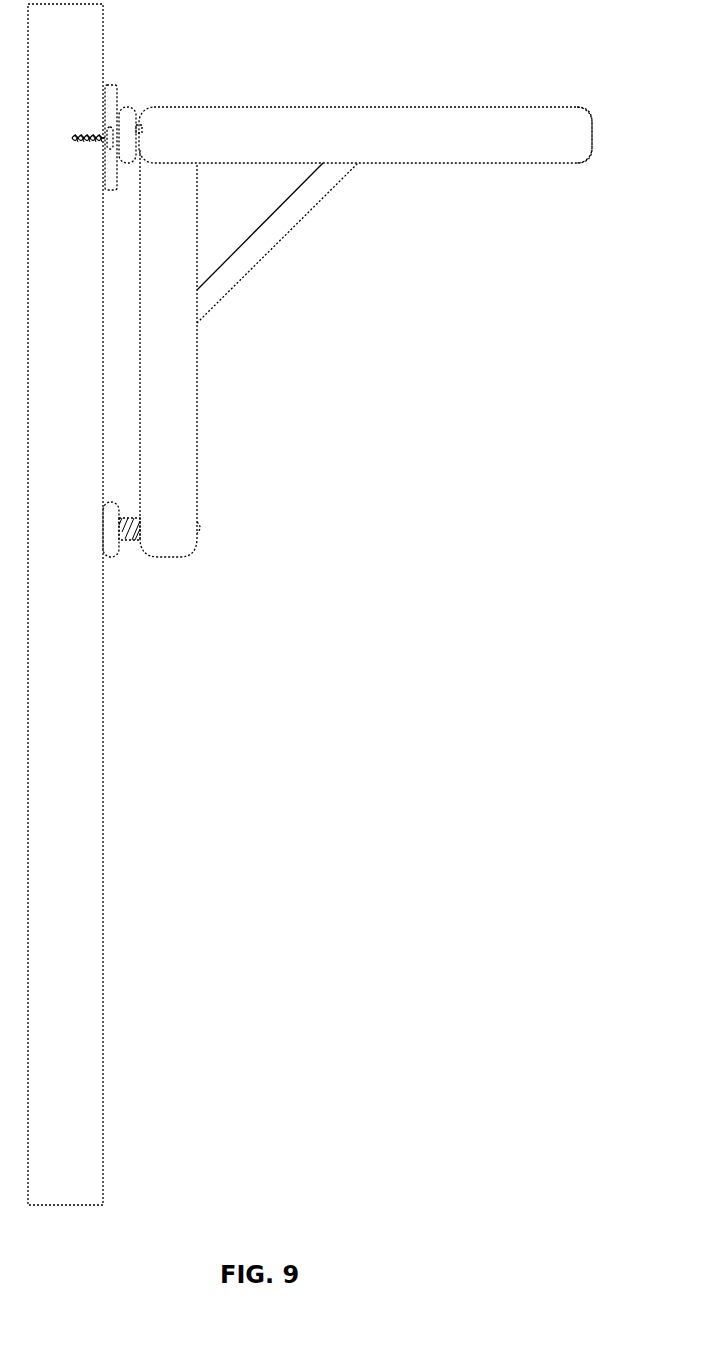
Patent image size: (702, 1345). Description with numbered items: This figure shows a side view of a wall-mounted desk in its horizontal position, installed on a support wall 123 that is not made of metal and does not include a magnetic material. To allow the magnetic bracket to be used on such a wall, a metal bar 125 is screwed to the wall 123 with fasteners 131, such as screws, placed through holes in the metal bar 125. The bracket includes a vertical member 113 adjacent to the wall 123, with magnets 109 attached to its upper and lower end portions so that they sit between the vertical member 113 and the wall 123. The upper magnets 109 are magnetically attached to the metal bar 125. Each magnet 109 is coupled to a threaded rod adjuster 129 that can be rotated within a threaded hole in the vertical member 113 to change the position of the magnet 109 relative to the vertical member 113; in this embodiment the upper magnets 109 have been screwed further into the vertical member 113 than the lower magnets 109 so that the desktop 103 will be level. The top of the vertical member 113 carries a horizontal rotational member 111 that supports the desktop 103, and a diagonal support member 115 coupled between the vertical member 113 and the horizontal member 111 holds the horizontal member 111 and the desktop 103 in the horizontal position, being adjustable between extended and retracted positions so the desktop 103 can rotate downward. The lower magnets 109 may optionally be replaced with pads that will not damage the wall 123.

The desktop 103 is at (333, 105).
The magnets 109 is at (127, 110).
The horizontal rotational member 111 is at (468, 153).
The vertical member 113 is at (188, 448).
The support member 115 is at (260, 247).
The support wall 123 is at (93, 827).
The metal bar 125 is at (113, 88).
The threaded rod adjusters 129 is at (138, 130).
The fasteners 131 is at (82, 132).